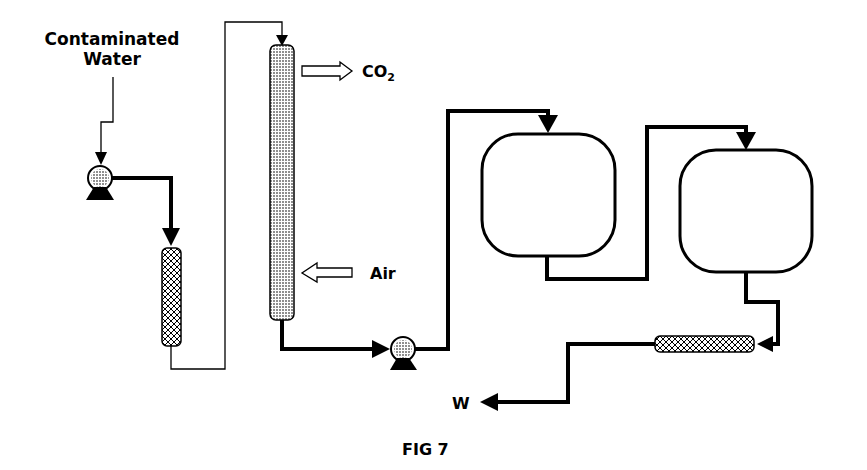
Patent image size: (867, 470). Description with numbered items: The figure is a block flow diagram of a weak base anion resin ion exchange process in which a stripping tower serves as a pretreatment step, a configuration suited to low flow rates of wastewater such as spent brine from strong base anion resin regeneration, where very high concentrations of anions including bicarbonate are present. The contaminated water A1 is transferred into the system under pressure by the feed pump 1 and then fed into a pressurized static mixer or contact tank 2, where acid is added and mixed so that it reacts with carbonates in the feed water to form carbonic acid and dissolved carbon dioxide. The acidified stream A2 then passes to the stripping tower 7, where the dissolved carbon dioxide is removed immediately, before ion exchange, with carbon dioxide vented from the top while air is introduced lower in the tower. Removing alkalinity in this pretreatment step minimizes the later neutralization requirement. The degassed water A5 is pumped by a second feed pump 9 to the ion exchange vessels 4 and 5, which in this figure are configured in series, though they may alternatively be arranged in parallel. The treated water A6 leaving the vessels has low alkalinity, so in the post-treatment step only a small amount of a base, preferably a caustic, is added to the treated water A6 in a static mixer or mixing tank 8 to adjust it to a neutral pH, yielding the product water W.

The feed pump 1 is at (76, 178).
The pressurized static mixer or contact tank 2 is at (190, 292).
The stripping tower 7 is at (258, 183).
The second feed pump 9 is at (397, 328).
The ion exchange vessel 4 is at (622, 188).
The ion exchange vessel 5 is at (818, 206).
The static mixer or mixing tank 8 is at (702, 325).
The contaminated water A1 is at (118, 121).
The ion exchange effluent stream A2 is at (229, 211).
The degassed water A5 is at (336, 347).
The treated water A6 is at (777, 312).